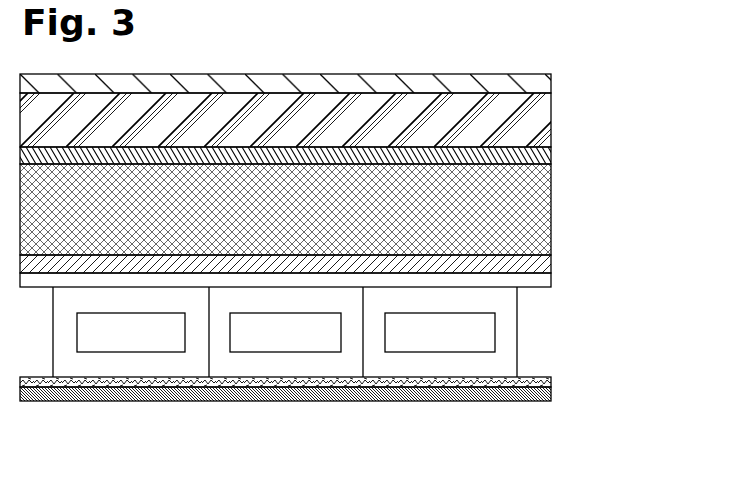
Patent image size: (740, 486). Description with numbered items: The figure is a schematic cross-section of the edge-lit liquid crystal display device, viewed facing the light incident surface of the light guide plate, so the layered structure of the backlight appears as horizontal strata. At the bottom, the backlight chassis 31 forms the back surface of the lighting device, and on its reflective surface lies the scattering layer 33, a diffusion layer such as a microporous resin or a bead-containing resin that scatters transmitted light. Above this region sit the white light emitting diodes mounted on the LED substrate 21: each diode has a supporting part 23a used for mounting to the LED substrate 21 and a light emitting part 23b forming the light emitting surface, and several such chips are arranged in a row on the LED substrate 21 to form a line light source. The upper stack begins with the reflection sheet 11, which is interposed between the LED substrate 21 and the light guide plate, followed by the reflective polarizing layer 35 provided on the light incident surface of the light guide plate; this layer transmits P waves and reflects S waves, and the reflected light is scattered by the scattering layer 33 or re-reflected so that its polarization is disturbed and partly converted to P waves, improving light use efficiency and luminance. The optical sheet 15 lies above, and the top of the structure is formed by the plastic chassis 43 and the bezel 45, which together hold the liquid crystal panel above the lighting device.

The bezel 45 is at (543, 84).
The plastic chassis 43 is at (543, 122).
The optical sheet 15 is at (547, 157).
The reflective polarizing layer 35 is at (543, 213).
The reflection sheet 11 is at (543, 266).
The LED substrate 21 is at (550, 283).
The supporting part 23a is at (507, 307).
The light emitting part 23b is at (485, 335).
The scattering layer 33 is at (551, 383).
The backlight chassis 31 is at (551, 400).